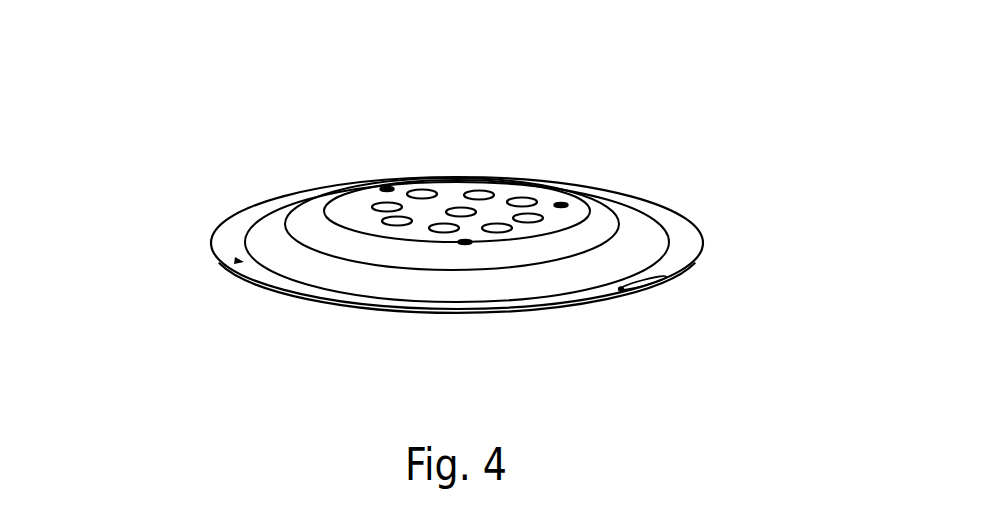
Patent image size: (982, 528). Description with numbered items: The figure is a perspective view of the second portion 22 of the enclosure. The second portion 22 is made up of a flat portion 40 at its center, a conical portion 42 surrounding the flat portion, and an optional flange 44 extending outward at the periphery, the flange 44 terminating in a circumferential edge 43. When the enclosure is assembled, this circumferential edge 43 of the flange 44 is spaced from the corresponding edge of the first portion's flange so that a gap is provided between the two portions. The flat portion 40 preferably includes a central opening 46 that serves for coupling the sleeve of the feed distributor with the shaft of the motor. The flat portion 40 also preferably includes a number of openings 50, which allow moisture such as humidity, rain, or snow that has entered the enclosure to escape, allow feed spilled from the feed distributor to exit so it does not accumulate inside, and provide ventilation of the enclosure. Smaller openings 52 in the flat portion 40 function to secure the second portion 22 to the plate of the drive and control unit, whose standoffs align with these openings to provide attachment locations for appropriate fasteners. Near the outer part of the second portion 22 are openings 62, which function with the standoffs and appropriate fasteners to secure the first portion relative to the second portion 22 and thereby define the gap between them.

The second portion 22 is at (616, 226).
The flat portion 40 is at (365, 210).
The conical portion 42 is at (278, 245).
The circumferential edge 43 is at (690, 247).
The flange 44 is at (690, 243).
The opening 46 is at (453, 210).
The openings 50 is at (424, 191).
The openings 52 is at (387, 189).
The openings 62 is at (236, 259).